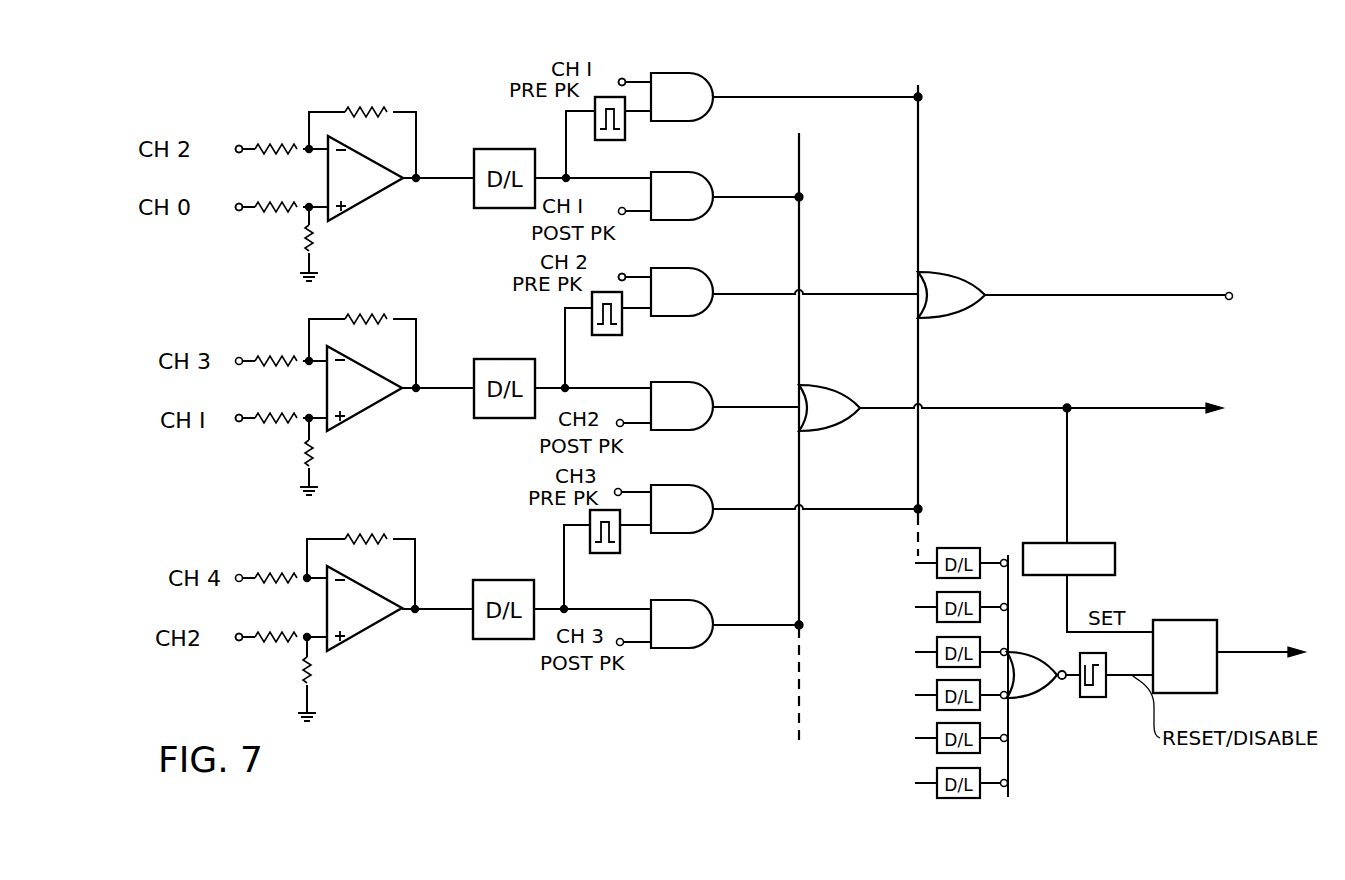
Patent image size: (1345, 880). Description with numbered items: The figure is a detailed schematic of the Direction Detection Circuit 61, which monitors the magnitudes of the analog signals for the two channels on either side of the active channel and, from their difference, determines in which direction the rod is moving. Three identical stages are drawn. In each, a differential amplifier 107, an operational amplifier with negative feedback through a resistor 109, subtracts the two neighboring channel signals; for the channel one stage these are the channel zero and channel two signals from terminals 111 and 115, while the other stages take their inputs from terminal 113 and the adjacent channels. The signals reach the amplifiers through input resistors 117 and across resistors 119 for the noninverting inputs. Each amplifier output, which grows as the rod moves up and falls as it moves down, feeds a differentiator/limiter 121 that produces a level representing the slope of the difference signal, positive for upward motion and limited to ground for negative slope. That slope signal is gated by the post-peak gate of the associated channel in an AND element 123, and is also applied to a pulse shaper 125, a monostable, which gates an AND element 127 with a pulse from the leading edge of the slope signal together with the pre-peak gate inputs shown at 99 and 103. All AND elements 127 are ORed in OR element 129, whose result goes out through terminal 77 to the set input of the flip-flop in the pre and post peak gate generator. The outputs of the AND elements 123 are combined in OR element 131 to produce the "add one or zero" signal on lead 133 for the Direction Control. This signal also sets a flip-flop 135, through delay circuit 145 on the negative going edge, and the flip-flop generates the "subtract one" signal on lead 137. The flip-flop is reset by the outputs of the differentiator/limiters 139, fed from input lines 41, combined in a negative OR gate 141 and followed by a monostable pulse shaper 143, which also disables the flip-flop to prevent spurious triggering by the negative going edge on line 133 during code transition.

The input lines to differentiator/limiters 41 is at (920, 563).
The Direction Detection Circuit 61 is at (481, 286).
The terminal 77 is at (1129, 297).
The channel 1 pre-peak gate input 99 is at (617, 68).
The channel 2 pre-peak gate input 103 is at (633, 263).
The differential amplifier 107 is at (405, 151).
The feedback resistor 109 is at (368, 112).
The channel 0 terminal 111 is at (233, 194).
The channel 1 terminal 113 is at (229, 407).
The channel 2 terminal 115 is at (226, 389).
The input resistor 117 is at (265, 160).
The resistor for noninverting input 119 is at (309, 240).
The differentiator/limiter 121 is at (497, 152).
The AND element 123 is at (707, 184).
The pulse shaper 125 is at (625, 138).
The AND element 127 is at (707, 85).
The OR element 129 is at (968, 288).
The OR element 131 is at (823, 394).
The lead 133 is at (1150, 410).
The flip-flop 135 is at (1180, 620).
The lead 137 is at (1236, 654).
The differentiator/limiter 139 is at (961, 548).
The negative OR gate 141 is at (1020, 664).
The monostable pulse shaper 143 is at (1099, 697).
The delay circuit 145 is at (1098, 543).